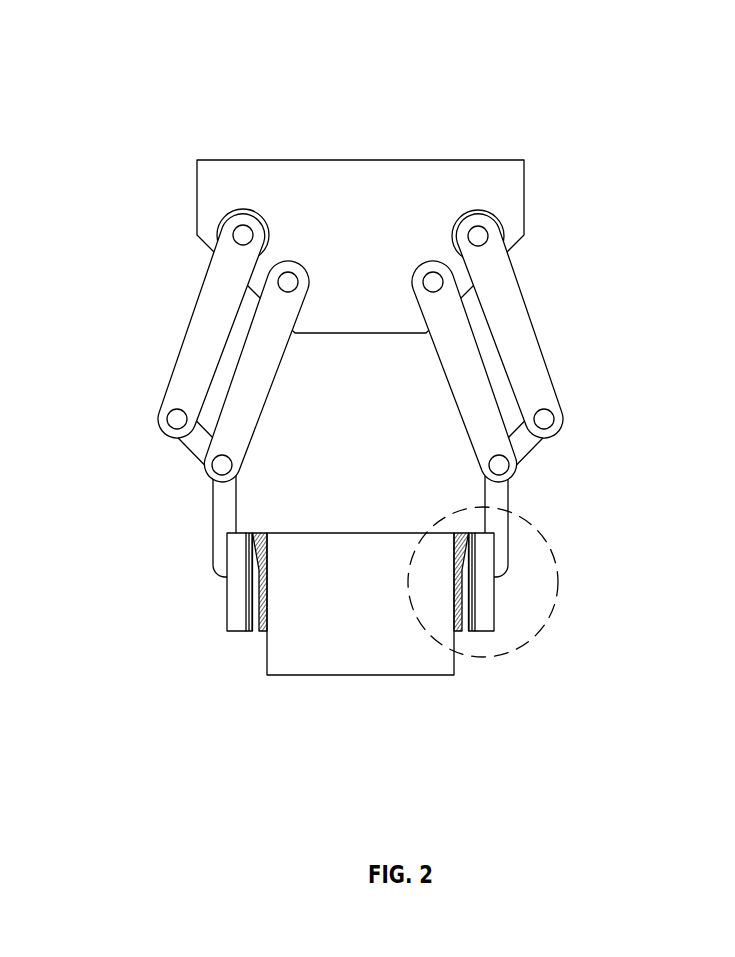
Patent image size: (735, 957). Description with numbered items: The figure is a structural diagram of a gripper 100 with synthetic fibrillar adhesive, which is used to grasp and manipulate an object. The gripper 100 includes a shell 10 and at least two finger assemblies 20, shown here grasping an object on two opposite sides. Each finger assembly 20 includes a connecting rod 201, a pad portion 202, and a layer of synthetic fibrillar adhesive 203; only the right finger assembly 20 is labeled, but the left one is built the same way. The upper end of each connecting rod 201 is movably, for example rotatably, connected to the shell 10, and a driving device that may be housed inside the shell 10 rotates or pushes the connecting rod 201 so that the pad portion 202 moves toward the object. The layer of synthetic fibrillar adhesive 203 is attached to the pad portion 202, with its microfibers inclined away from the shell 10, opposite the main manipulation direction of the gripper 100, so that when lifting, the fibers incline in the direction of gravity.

The gripper 100 is at (205, 95).
The shell 10 is at (457, 180).
The finger assembly 20 is at (637, 440).
The connecting rod 201 is at (534, 386).
The pad portion 202 is at (493, 600).
The layer of synthetic fibrillar adhesive 203 is at (455, 632).